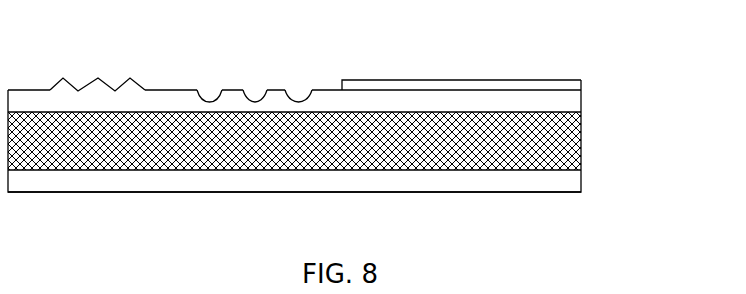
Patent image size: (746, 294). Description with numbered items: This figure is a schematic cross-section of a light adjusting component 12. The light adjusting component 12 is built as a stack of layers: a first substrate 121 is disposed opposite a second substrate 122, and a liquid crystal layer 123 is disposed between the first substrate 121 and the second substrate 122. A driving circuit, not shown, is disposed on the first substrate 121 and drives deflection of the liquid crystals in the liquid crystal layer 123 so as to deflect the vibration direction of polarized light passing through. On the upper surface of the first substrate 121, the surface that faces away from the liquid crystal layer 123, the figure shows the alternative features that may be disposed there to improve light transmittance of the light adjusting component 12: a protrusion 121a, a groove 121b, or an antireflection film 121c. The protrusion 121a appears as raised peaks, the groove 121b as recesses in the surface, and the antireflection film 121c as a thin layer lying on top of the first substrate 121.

The light adjusting component 12 is at (42, 52).
The first substrate 121 is at (577, 102).
The protrusion 121a is at (93, 82).
The groove 121b is at (252, 100).
The antireflection film 121c is at (398, 86).
The second substrate 122 is at (577, 175).
The liquid crystal layer 123 is at (577, 138).